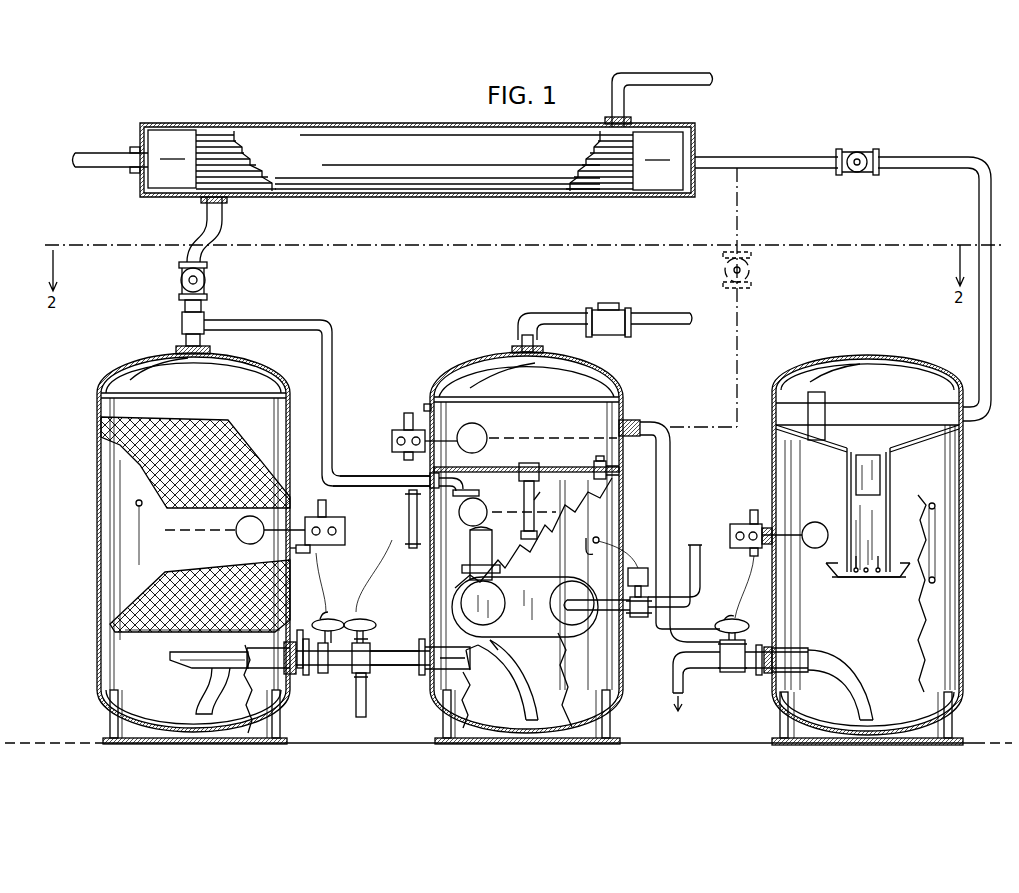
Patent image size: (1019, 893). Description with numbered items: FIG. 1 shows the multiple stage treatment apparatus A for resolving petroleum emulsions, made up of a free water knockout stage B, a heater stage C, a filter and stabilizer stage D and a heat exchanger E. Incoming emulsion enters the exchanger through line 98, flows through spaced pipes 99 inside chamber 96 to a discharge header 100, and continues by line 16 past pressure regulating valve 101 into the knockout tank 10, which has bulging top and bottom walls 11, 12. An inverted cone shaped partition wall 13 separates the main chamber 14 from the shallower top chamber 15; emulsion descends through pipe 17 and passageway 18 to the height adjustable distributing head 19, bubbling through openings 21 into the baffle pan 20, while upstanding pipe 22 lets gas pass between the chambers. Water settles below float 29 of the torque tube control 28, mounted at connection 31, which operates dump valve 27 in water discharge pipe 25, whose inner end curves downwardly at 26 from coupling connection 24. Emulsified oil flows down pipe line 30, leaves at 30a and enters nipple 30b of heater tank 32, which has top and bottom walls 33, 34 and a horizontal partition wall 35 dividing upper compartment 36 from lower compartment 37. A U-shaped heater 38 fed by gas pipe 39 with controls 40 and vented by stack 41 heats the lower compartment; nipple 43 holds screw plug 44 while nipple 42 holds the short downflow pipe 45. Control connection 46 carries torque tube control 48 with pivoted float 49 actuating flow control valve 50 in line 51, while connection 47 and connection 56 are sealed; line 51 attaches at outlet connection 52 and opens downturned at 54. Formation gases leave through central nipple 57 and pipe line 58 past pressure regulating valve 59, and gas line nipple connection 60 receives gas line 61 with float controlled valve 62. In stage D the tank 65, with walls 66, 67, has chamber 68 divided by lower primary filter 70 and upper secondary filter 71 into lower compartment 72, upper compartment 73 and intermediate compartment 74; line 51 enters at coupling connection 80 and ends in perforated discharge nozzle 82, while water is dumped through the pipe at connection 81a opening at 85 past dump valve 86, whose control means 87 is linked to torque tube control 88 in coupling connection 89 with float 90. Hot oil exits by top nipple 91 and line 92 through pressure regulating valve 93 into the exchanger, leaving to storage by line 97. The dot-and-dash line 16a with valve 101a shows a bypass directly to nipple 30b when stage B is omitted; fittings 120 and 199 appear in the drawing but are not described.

The multiple stage treatment apparatus A is at (203, 116).
The free water knockout stage B is at (965, 484).
The heater stage C is at (582, 366).
The filter and stabilizer stage D is at (248, 370).
The heat exchanger E is at (427, 176).
The cylindrical tank 10 is at (958, 528).
The top end wall 11 is at (868, 358).
The bottom end wall 12 is at (905, 740).
The inverted cone shaped partition wall 13 is at (910, 436).
The main chamber 14 is at (966, 450).
The top shallower chamber 15 is at (910, 380).
The incoming pipe line 16 is at (993, 312).
The line 16a is at (749, 322).
The downwardly extending pipe 17 is at (892, 464).
The passageway 18 is at (888, 490).
The height adjustable distributing head 19 is at (884, 540).
The baffle pan 20 is at (842, 578).
The openings 21 is at (868, 577).
The upstanding pipe 22 is at (830, 420).
The coupling connection 24 is at (812, 652).
The water discharge pipe 25 is at (748, 672).
The downwardly curving inner end 26 is at (850, 672).
The dump valve 27 is at (730, 672).
The torque tube liquid level control 28 is at (746, 524).
The float 29 is at (826, 520).
The pipe line 30 is at (790, 482).
The line 30a is at (704, 636).
The nipple 30b is at (646, 422).
The coupling connection 31 is at (760, 560).
The tank 32 is at (428, 552).
The top wall 33 is at (572, 366).
The bottom wall 34 is at (576, 738).
The horizontal partition wall 35 is at (574, 468).
The upper compartment 36 is at (610, 390).
The lower compartment 37 is at (614, 498).
The U-shaped heater 38 is at (556, 636).
The pipe 39 is at (700, 558).
The controls 40 is at (610, 548).
The stack 41 is at (496, 568).
The central internally screw threaded nipple 42 is at (533, 472).
The second screw threaded nipple 43 is at (618, 472).
The detachable screw plug 44 is at (600, 460).
The short downflow pipe 45 is at (462, 142).
The tubular flanged control connection 46 is at (404, 426).
The tubular flanged control connection 47 is at (410, 530).
The torque tube liquid level control 48 is at (392, 443).
The pivoted float 49 is at (486, 428).
The flow control valve 50 is at (356, 612).
The line 51 is at (402, 664).
The outlet connection 52 is at (437, 672).
The downturned opening 54 is at (516, 690).
The connection 56 is at (421, 636).
The central nipple 57 is at (536, 350).
The pipe line 58 is at (558, 314).
The pressure regulating valve 59 is at (606, 300).
The gas line nipple connection 60 is at (430, 478).
The gas line 61 is at (366, 478).
The float controlled valve 62 is at (484, 504).
The tank 65 is at (98, 532).
The top wall 66 is at (160, 358).
The bottom wall 67 is at (235, 735).
The chamber 68 is at (98, 672).
The lower primary filter 70 is at (98, 640).
The upper secondary filter 71 is at (112, 414).
The lower compartment 72 is at (112, 706).
The upper compartment 73 is at (128, 382).
The intermediate compartment 74 is at (210, 570).
The pipe coupling connection 80 is at (318, 668).
The valve 81a is at (358, 700).
The perforated discharge nozzle 82 is at (176, 656).
The opening 85 is at (208, 690).
The dump valve 86 is at (332, 672).
The control means 87 is at (324, 612).
The torque tube liquid level control 88 is at (320, 520).
The coupling connection 89 is at (300, 516).
The float 90 is at (240, 540).
The top nipple 91 is at (208, 348).
The line 92 is at (204, 320).
The pressure regulating valve 93 is at (207, 280).
The chamber 96 is at (650, 140).
The line 97 is at (705, 80).
The line 98 is at (110, 162).
The spaced pipes 99 is at (212, 150).
The discharge header 100 is at (668, 152).
The pressure regulating valve 101 is at (862, 150).
The pressure regulating valve 101a is at (748, 270).
The fitting 120 is at (428, 404).
The flange 199 is at (300, 630).